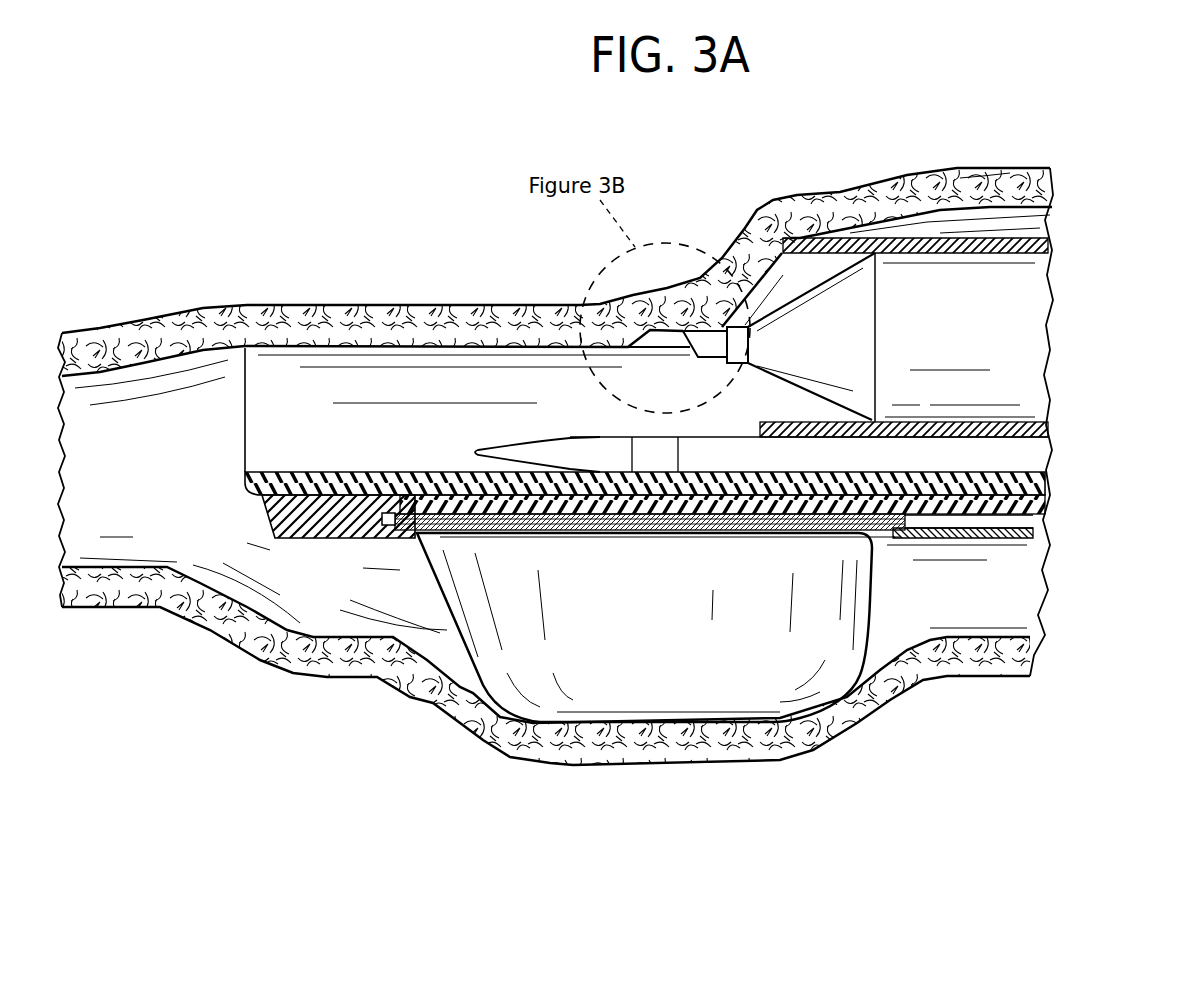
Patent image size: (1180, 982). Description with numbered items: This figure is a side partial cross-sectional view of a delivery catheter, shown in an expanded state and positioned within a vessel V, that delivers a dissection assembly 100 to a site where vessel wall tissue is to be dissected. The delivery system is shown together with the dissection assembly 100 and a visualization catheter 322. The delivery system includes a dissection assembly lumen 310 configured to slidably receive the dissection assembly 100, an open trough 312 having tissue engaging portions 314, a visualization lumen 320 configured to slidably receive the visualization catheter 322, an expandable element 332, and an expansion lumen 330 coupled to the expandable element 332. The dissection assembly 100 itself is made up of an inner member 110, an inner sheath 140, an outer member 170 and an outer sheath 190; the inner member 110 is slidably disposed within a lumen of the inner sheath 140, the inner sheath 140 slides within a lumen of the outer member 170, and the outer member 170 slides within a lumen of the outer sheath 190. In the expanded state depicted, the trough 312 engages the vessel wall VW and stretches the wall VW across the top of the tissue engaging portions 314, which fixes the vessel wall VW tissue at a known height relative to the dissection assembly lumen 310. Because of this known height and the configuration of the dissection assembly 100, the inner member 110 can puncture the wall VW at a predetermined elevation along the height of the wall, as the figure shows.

The vessel V is at (312, 281).
The vessel wall VW is at (988, 182).
The open trough 312 is at (290, 383).
The tissue engaging portions 314 is at (452, 340).
The dissection assembly lumen 310 is at (801, 277).
The dissection assembly 100 is at (910, 278).
The outer member 170 is at (793, 356).
The outer sheath 190 is at (922, 348).
The inner member 110 is at (710, 353).
The inner sheath 140 is at (742, 366).
The visualization lumen 320 is at (1013, 418).
The visualization catheter 322 is at (1015, 455).
The expansion lumen 330 is at (1008, 521).
The expandable element 332 is at (765, 666).